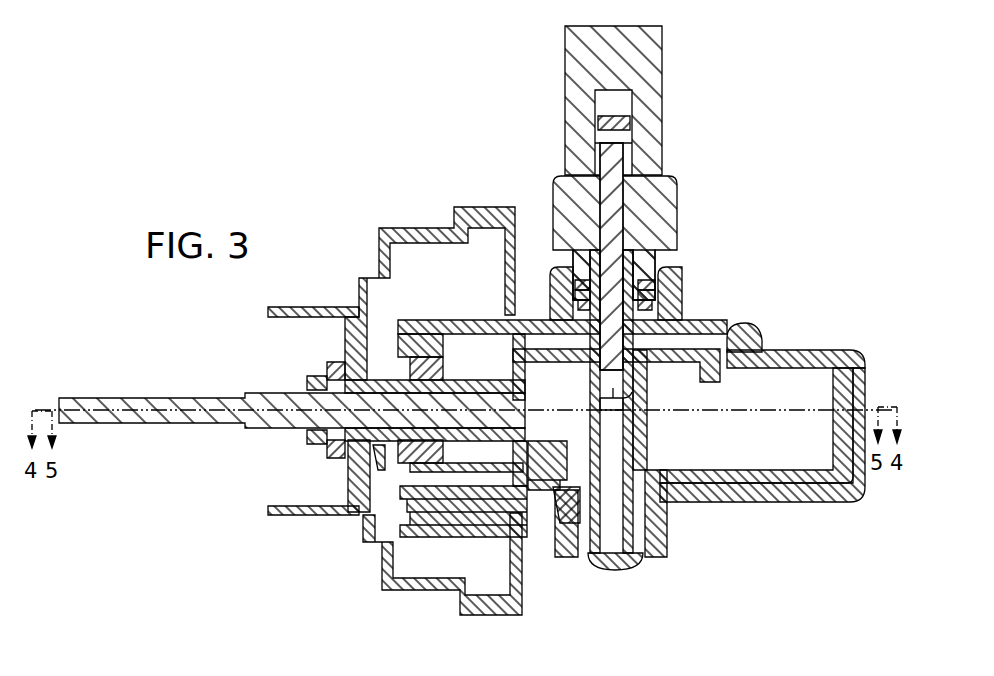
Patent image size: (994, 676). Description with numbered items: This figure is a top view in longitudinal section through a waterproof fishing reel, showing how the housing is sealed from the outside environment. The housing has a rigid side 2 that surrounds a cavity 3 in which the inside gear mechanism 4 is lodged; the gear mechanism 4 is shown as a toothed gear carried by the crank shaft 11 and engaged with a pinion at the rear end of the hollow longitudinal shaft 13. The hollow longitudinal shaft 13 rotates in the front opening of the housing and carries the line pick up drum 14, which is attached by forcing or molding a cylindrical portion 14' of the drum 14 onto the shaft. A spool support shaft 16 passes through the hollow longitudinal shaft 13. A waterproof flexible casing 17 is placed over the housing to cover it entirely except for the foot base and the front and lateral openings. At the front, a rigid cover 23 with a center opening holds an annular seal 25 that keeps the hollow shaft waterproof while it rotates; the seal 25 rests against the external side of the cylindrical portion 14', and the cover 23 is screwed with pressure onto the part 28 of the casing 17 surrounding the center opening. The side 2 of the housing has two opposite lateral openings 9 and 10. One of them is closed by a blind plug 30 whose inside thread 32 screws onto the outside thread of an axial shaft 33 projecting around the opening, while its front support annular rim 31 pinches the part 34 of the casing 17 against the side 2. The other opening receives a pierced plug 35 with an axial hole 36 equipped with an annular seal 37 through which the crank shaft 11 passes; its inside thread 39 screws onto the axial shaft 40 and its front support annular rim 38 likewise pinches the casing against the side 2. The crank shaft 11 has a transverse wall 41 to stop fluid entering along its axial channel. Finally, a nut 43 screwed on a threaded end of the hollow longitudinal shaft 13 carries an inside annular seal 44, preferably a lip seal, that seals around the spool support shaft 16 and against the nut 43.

The rigid side 2 is at (748, 472).
The cavity 3 is at (807, 468).
The inside gear mechanism 4 is at (712, 380).
The lateral opening 9 is at (665, 520).
The lateral opening 10 is at (737, 335).
The crank shaft 11 is at (663, 190).
The hollow longitudinal shaft 13 is at (472, 447).
The line pick up drum 14 is at (402, 411).
The cylindrical portion 14' is at (333, 466).
The spool support shaft 16 is at (97, 398).
The waterproof flexible casing 17 is at (820, 352).
The rigid cover 23 is at (433, 320).
The annular seal 25 is at (387, 350).
The part of the casing 28 is at (470, 328).
The blind plug 30 is at (615, 570).
The front support annular rim 31 is at (556, 538).
The inside thread 32 is at (555, 533).
The axial shaft 33 is at (647, 503).
The part of the casing 34 is at (538, 490).
The pierced plug 35 is at (655, 290).
The axial hole 36 is at (653, 245).
The annular seal 37 is at (650, 277).
The front support annular rim 38 is at (550, 318).
The inside thread 39 is at (660, 303).
The axial shaft 40 is at (672, 318).
The transverse wall 41 is at (624, 398).
The nut 43 is at (327, 363).
The inside annular seal 44 is at (307, 386).